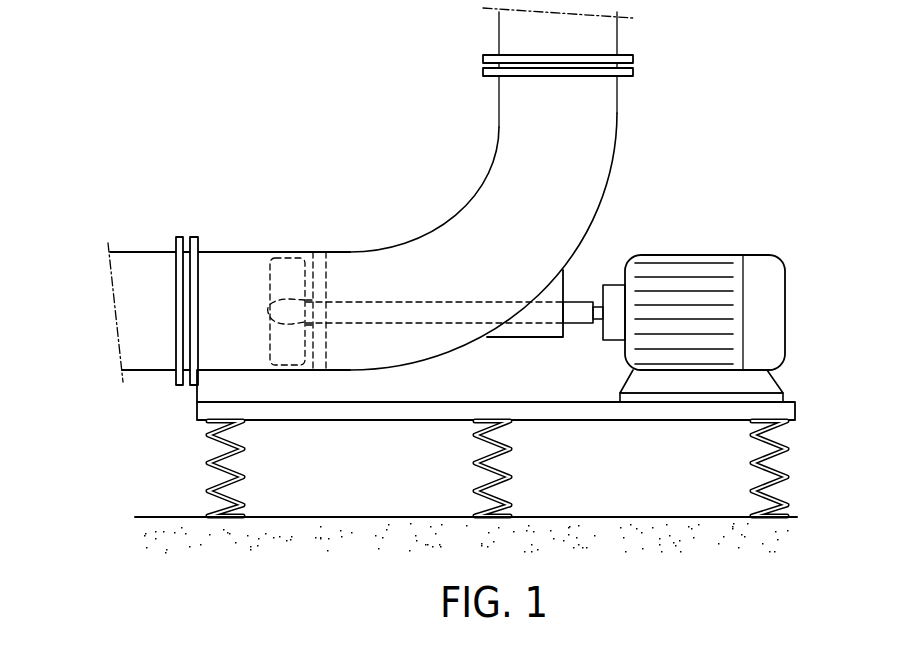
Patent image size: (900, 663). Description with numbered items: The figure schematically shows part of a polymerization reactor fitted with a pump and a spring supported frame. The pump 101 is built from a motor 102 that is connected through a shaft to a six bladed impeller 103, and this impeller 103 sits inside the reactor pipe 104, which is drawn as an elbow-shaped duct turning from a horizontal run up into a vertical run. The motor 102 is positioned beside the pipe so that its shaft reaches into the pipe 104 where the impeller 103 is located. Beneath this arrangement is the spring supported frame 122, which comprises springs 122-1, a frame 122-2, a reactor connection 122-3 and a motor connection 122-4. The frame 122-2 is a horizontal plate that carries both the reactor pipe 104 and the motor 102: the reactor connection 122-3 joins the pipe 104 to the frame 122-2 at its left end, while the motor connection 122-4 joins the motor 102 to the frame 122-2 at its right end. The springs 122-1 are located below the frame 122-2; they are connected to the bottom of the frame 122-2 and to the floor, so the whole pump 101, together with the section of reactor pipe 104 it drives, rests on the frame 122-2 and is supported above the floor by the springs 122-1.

The pump 101 is at (445, 281).
The motor 102 is at (768, 312).
The six bladed impeller 103 is at (290, 275).
The reactor pipe 104 is at (228, 250).
The spring supported frame 122 is at (445, 436).
The springs 122-1 is at (787, 478).
The frame 122-2 is at (790, 412).
The reactor connection 122-3 is at (197, 392).
The motor connection 122-4 is at (773, 386).